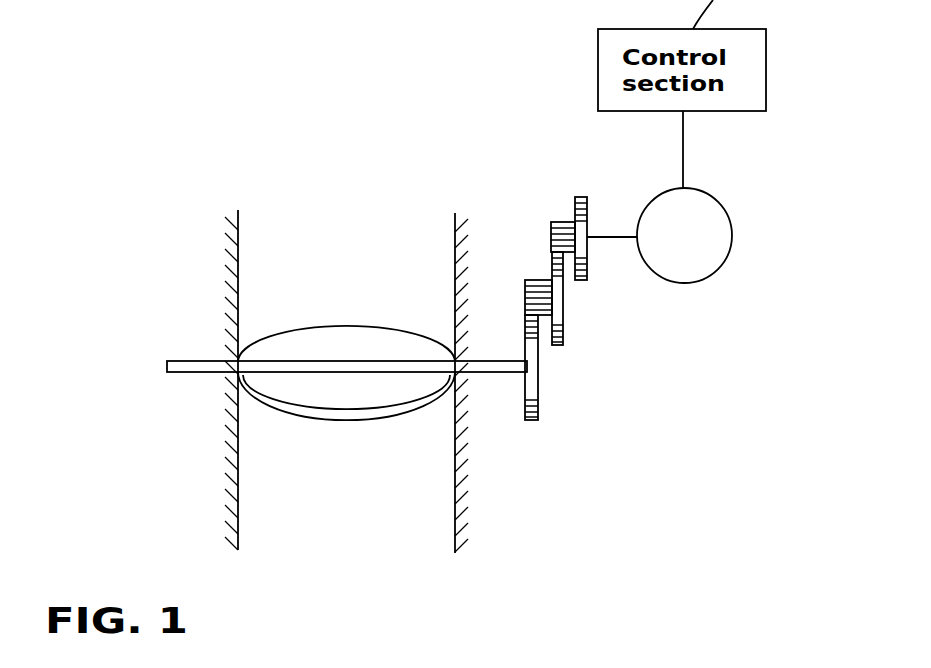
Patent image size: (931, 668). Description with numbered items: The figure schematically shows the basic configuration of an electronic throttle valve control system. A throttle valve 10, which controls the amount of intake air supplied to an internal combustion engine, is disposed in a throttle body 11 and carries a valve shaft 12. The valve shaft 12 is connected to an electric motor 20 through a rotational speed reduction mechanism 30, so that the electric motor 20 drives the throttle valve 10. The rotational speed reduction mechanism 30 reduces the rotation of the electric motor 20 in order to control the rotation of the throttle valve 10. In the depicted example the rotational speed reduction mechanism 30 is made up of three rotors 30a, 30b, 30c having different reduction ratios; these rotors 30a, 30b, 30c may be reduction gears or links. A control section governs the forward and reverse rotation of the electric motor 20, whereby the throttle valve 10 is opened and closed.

The throttle valve 10 is at (347, 326).
The throttle body 11 is at (238, 232).
The valve shaft 12 is at (182, 361).
The electric motor 20 is at (716, 268).
The rotational speed reduction mechanism 30 is at (590, 184).
The rotor 30a is at (582, 281).
The rotor 30b is at (557, 345).
The rotor 30c is at (532, 420).